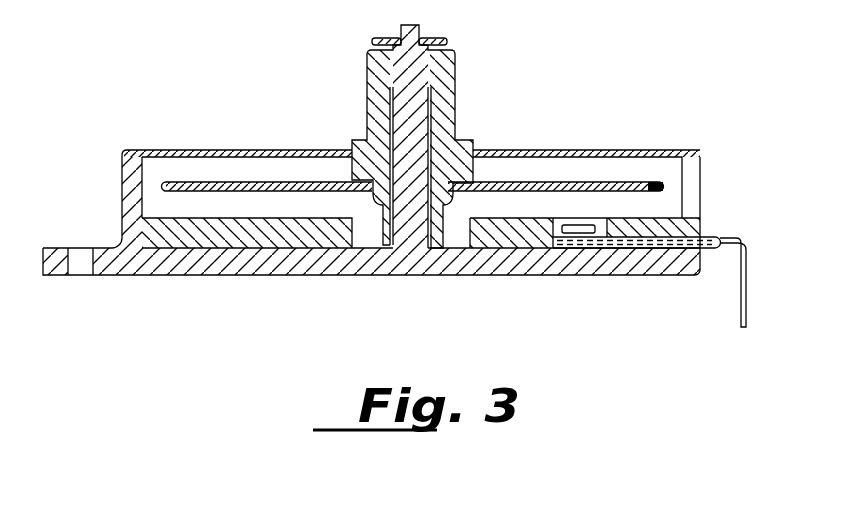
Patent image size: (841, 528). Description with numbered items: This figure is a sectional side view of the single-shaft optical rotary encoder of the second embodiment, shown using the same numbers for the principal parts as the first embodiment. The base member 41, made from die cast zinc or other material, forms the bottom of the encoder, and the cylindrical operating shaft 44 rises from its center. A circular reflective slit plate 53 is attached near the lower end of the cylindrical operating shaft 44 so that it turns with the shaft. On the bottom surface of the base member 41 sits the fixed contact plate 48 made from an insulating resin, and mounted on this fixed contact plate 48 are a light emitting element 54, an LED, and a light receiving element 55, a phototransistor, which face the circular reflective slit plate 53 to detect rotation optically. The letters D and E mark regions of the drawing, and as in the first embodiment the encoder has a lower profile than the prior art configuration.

The base member 41 is at (357, 262).
The cylindrical operating shaft 44 is at (443, 110).
The fixed contact plate 48 is at (510, 243).
The circular reflective slit plate 53 is at (523, 187).
The light emitting element 54 is at (577, 237).
The light receiving element 55 is at (585, 233).
The region D is at (362, 48).
The region E is at (118, 152).